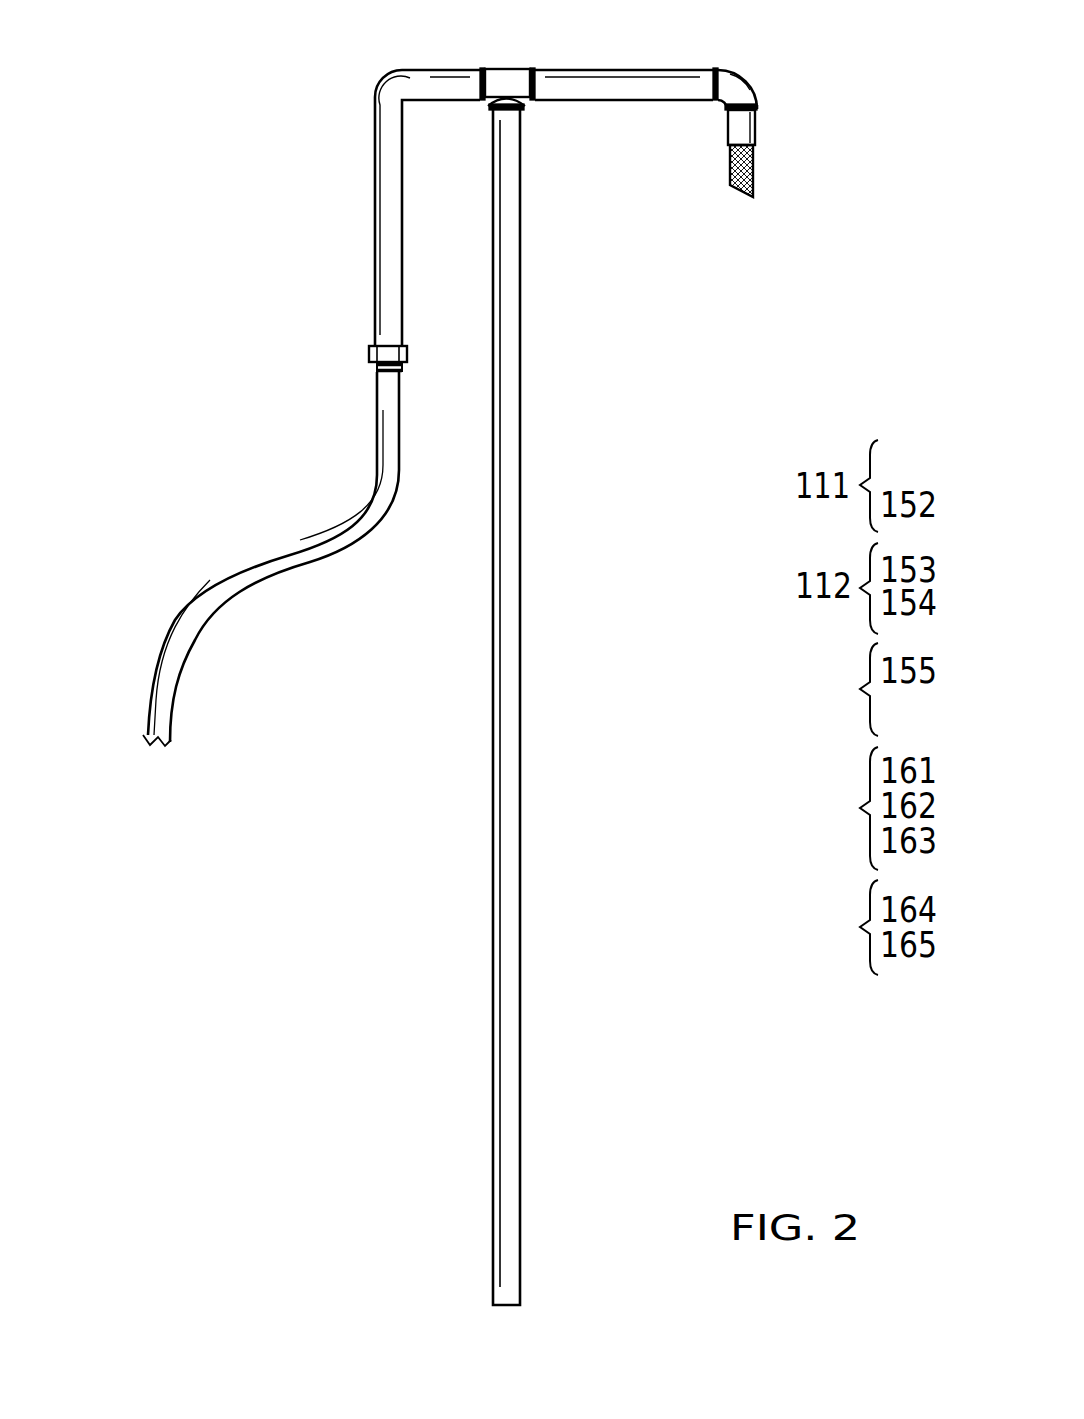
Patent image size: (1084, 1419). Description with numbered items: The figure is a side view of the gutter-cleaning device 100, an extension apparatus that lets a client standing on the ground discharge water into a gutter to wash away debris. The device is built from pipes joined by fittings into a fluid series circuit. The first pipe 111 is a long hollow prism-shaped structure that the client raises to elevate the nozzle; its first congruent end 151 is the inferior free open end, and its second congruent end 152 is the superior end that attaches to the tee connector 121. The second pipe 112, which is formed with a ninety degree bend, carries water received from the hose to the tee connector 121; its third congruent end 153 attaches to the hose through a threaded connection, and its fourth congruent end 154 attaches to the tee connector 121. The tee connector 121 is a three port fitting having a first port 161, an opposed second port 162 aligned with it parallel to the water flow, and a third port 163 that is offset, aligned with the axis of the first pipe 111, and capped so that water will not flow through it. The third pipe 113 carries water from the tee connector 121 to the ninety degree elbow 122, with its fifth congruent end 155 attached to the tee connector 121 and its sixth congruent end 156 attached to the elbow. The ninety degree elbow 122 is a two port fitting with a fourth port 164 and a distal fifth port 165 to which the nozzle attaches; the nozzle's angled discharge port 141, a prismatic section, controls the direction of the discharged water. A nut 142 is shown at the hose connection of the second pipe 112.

The gutter-cleaning device 100 is at (128, 99).
The first pipe 111 is at (517, 760).
The second pipe 112 is at (358, 131).
The third pipe 113 is at (823, 687).
The tee connector 121 is at (823, 809).
The 90 degree elbow 122 is at (823, 924).
The angled discharge port 141 is at (752, 171).
The nut 142 is at (405, 355).
The first congruent end 151 is at (908, 470).
The second congruent end 152 is at (512, 114).
The third congruent end 153 is at (377, 335).
The fourth congruent end 154 is at (477, 86).
The fifth congruent end 155 is at (533, 88).
The sixth congruent end 156 is at (908, 705).
The first port 161 is at (488, 103).
The second port 162 is at (527, 82).
The third port 163 is at (494, 110).
The fourth port 164 is at (713, 88).
The fifth port 165 is at (748, 100).